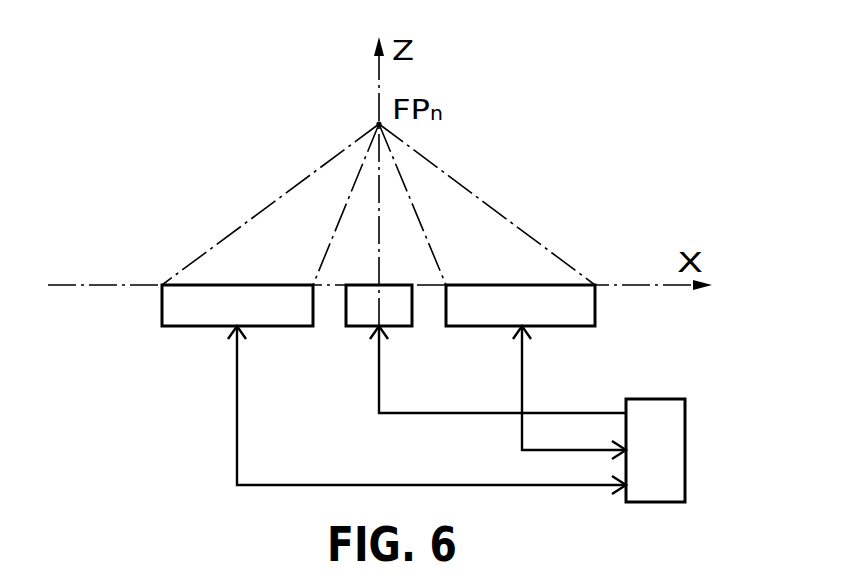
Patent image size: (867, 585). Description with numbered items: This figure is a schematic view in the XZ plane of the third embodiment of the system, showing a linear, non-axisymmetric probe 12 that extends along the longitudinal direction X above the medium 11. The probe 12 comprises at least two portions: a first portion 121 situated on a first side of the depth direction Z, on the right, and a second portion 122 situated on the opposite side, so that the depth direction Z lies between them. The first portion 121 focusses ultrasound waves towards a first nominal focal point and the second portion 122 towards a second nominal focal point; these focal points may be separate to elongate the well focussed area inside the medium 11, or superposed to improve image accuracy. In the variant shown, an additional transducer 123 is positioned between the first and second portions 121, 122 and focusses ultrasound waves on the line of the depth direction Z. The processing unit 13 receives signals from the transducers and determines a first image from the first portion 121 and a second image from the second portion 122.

The medium 11 is at (261, 170).
The probe 12 is at (572, 140).
The first portion 121 is at (550, 312).
The second portion 122 is at (203, 313).
The additional transducer 123 is at (367, 315).
The processing unit 13 is at (672, 464).